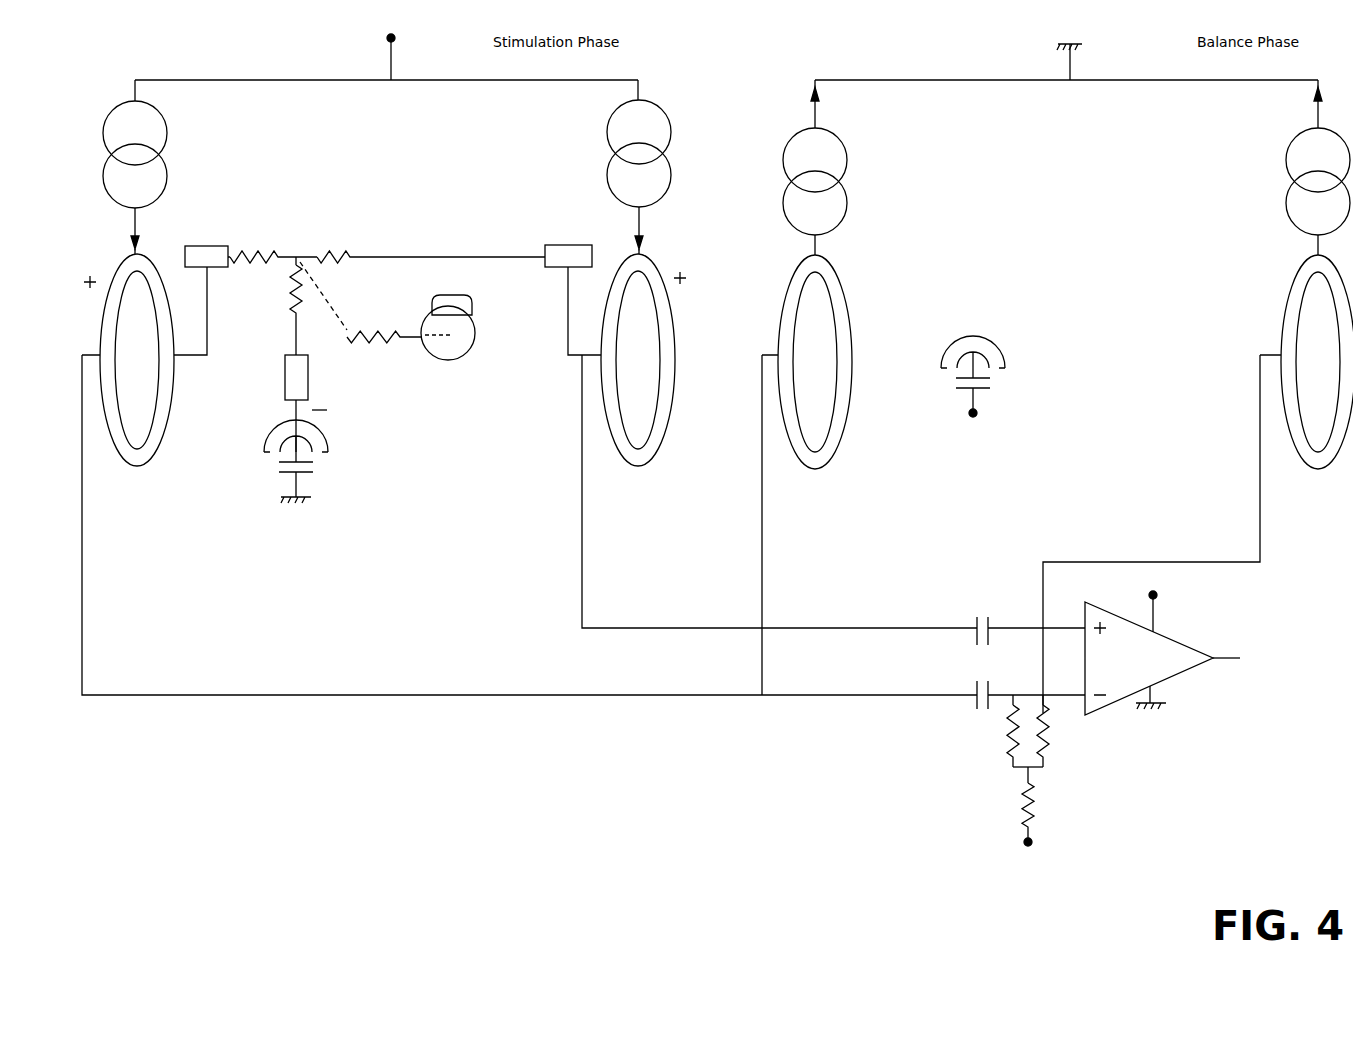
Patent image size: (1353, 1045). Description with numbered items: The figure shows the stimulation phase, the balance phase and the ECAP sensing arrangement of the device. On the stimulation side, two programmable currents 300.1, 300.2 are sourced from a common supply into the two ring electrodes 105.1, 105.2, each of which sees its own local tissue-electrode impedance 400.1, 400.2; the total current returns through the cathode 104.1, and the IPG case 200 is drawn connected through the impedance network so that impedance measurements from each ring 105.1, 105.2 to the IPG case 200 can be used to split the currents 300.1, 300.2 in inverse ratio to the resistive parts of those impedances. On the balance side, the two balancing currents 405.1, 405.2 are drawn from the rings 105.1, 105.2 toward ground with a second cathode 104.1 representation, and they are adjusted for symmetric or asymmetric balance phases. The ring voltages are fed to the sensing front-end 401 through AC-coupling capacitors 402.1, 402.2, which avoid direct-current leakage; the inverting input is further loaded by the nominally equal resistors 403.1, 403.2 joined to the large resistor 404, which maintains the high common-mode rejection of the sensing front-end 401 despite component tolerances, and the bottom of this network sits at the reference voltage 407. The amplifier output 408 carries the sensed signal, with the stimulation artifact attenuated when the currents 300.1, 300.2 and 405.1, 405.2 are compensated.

The stimulation current 300.1 is at (178, 153).
The stimulation current 300.2 is at (598, 157).
The local impedance 400.1 is at (212, 237).
The local impedance 400.2 is at (545, 242).
The ring 105.1 is at (137, 466).
The ring 105.2 is at (638, 466).
The cathode 104.1 is at (338, 447).
The IPG case 200 is at (452, 345).
The balance current 405.1 is at (857, 183).
The balance current 405.2 is at (1278, 183).
The capacitor 402.1 is at (973, 618).
The capacitor 402.2 is at (975, 720).
The sensing front-end 401 is at (1149, 653).
The amplifier output 408 is at (1242, 658).
The resistor 403.1 is at (1000, 745).
The resistor 403.2 is at (1060, 740).
The resistor 404 is at (1045, 810).
The reference voltage 407 is at (1015, 838).